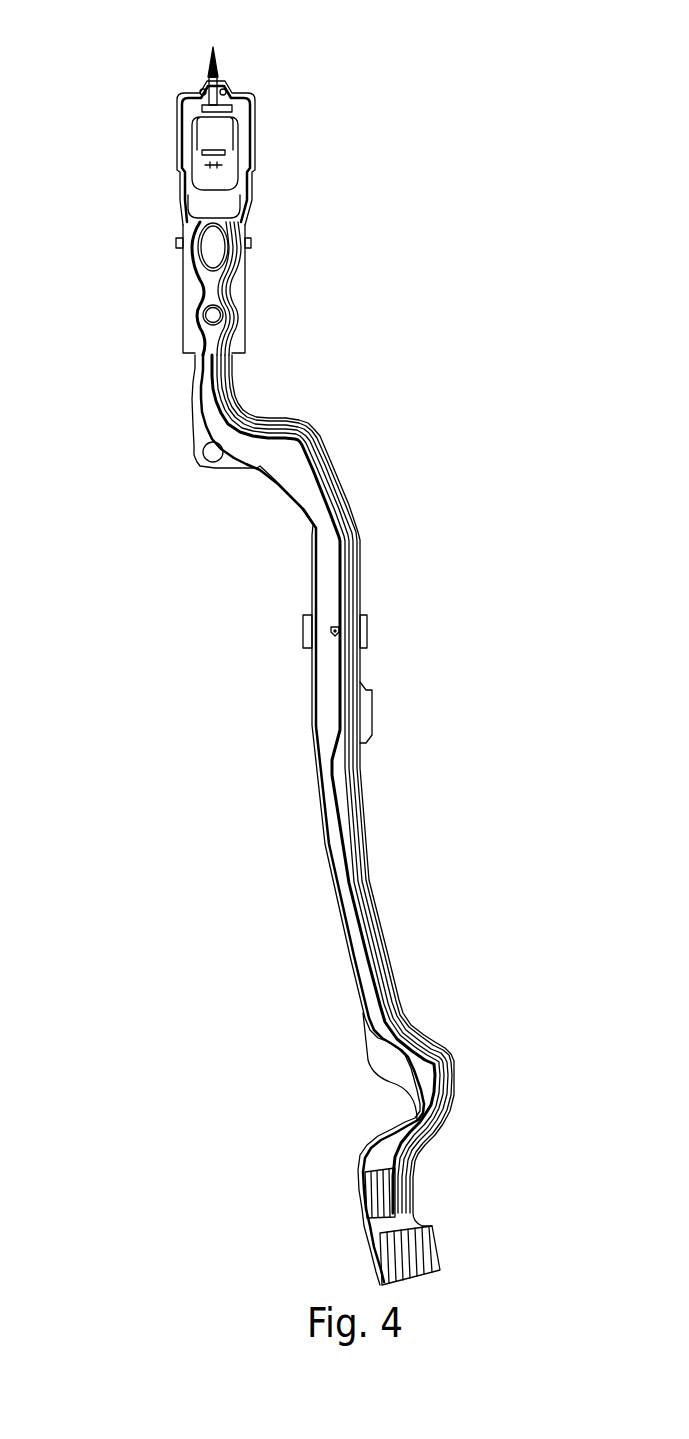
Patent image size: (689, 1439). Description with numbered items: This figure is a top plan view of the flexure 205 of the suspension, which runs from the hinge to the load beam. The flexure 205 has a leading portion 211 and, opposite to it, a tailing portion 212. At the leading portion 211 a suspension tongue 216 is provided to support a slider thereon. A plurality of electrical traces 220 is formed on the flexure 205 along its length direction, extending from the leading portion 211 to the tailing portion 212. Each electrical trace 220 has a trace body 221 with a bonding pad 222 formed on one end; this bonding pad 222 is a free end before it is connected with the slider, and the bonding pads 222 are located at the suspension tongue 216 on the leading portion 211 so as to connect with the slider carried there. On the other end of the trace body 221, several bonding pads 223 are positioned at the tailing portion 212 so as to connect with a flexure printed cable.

The flexure 205 is at (92, 32).
The leading portion 211 is at (265, 118).
The tailing portion 212 is at (463, 1187).
The suspension tongue 216 is at (215, 140).
The electrical traces 220 is at (238, 253).
The trace body 221 is at (232, 315).
The bonding pad 222 is at (220, 61).
The bonding pads 223 is at (382, 1255).